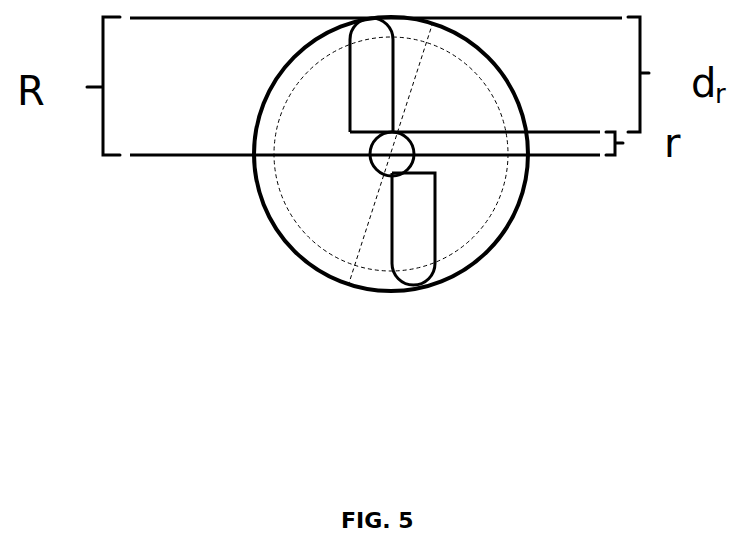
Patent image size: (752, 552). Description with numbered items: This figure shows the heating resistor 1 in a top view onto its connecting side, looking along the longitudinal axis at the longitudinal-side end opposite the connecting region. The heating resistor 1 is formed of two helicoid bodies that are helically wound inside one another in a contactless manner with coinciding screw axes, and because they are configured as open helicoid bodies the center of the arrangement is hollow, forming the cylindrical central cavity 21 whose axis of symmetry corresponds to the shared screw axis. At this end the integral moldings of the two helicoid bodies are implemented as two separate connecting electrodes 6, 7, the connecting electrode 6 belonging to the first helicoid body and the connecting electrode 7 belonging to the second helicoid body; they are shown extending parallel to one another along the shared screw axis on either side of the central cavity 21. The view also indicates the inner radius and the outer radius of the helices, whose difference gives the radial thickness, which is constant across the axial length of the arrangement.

The heating resistor 1 is at (234, 213).
The connecting electrode 6 is at (373, 72).
The connecting electrode 7 is at (418, 233).
The central cavity 21 is at (392, 162).